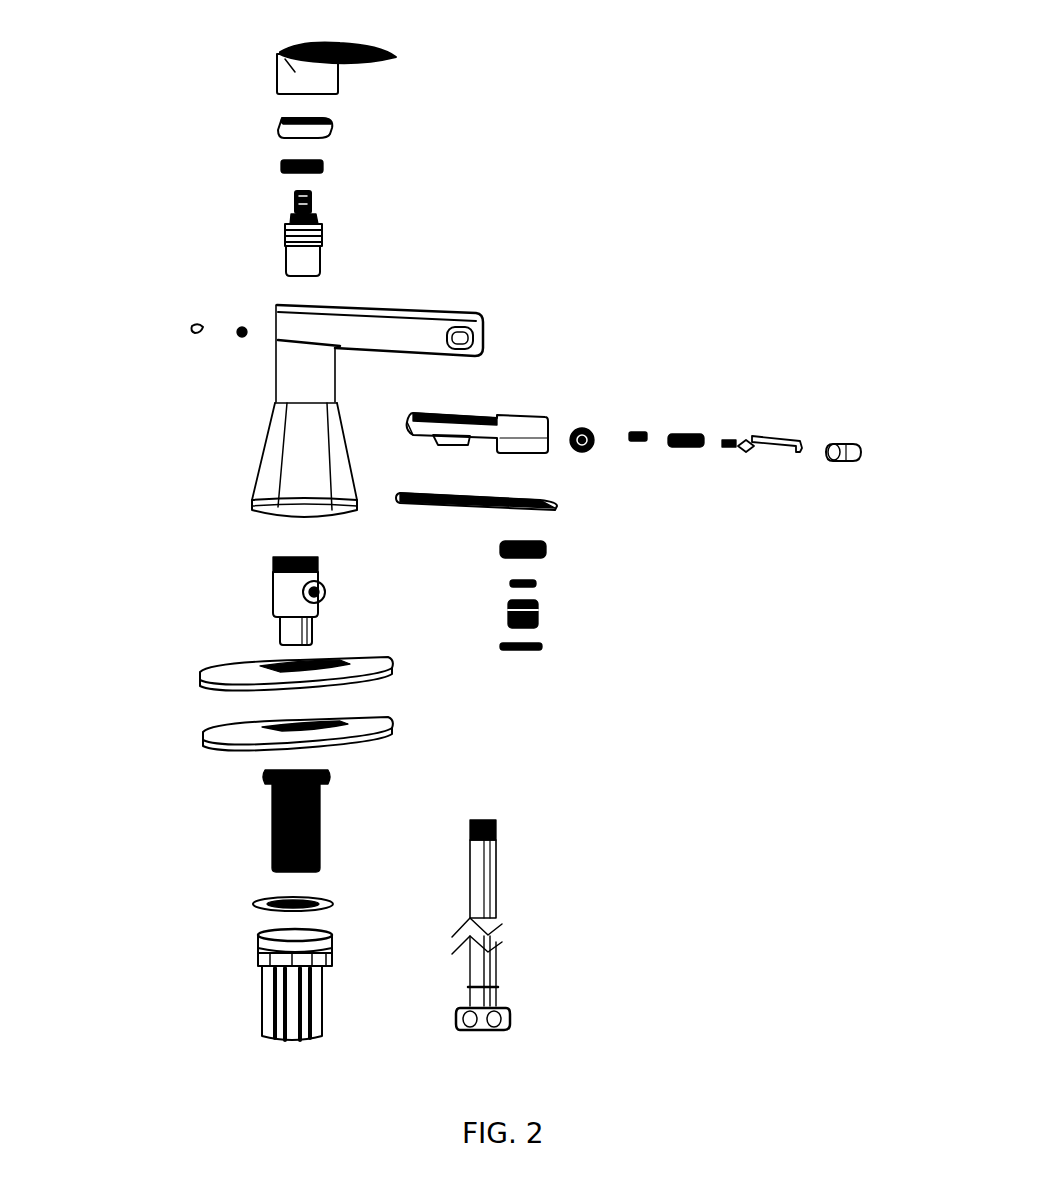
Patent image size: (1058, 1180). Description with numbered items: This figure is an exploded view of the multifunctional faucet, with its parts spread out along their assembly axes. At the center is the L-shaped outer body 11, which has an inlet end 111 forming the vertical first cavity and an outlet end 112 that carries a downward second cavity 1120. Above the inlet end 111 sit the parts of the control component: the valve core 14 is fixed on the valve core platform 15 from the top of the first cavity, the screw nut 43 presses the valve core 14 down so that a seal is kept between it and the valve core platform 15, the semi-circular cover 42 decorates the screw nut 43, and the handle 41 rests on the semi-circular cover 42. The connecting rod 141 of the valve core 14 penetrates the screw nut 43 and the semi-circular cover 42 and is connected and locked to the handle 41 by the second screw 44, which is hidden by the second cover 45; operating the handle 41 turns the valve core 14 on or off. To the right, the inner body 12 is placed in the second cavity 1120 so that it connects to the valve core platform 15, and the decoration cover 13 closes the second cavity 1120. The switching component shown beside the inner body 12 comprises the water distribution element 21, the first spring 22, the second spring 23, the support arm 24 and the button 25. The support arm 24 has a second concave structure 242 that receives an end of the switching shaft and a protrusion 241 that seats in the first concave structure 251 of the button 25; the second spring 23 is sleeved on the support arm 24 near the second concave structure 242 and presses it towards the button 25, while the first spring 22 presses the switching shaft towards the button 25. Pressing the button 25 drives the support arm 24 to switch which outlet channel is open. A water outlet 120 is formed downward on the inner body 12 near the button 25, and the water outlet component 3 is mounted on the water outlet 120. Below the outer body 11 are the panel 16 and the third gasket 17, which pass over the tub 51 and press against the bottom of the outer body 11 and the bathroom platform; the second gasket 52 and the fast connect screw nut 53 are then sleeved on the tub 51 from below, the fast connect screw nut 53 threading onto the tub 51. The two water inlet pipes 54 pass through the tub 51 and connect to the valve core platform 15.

The handle 41 is at (277, 53).
The semi-circular cover 42 is at (278, 120).
The screw nut 43 is at (280, 162).
The connecting rod 141 is at (308, 196).
The valve core 14 is at (285, 232).
The outer body 11 is at (282, 304).
The outlet end 112 is at (388, 309).
The second cavity 1120 is at (412, 357).
The inlet end 111 is at (268, 432).
The second cover 45 is at (195, 338).
The second screw 44 is at (240, 340).
The inner body 12 is at (518, 418).
The water outlet 120 is at (520, 452).
The water distribution element 21 is at (576, 430).
The first spring 22 is at (630, 432).
The second spring 23 is at (679, 434).
The support arm 24 is at (765, 438).
The second concave structure 242 is at (722, 446).
The protrusion 241 is at (800, 454).
The button 25 is at (843, 448).
The first concave structure 251 is at (832, 454).
The decoration cover 13 is at (555, 495).
The water outlet component 3 is at (572, 612).
The valve core platform 15 is at (278, 598).
The panel 16 is at (238, 668).
The third gasket 17 is at (238, 738).
The tub 51 is at (268, 820).
The second gasket 52 is at (262, 900).
The fast connect screw nut 53 is at (255, 935).
The water inlet pipes 54 is at (490, 888).